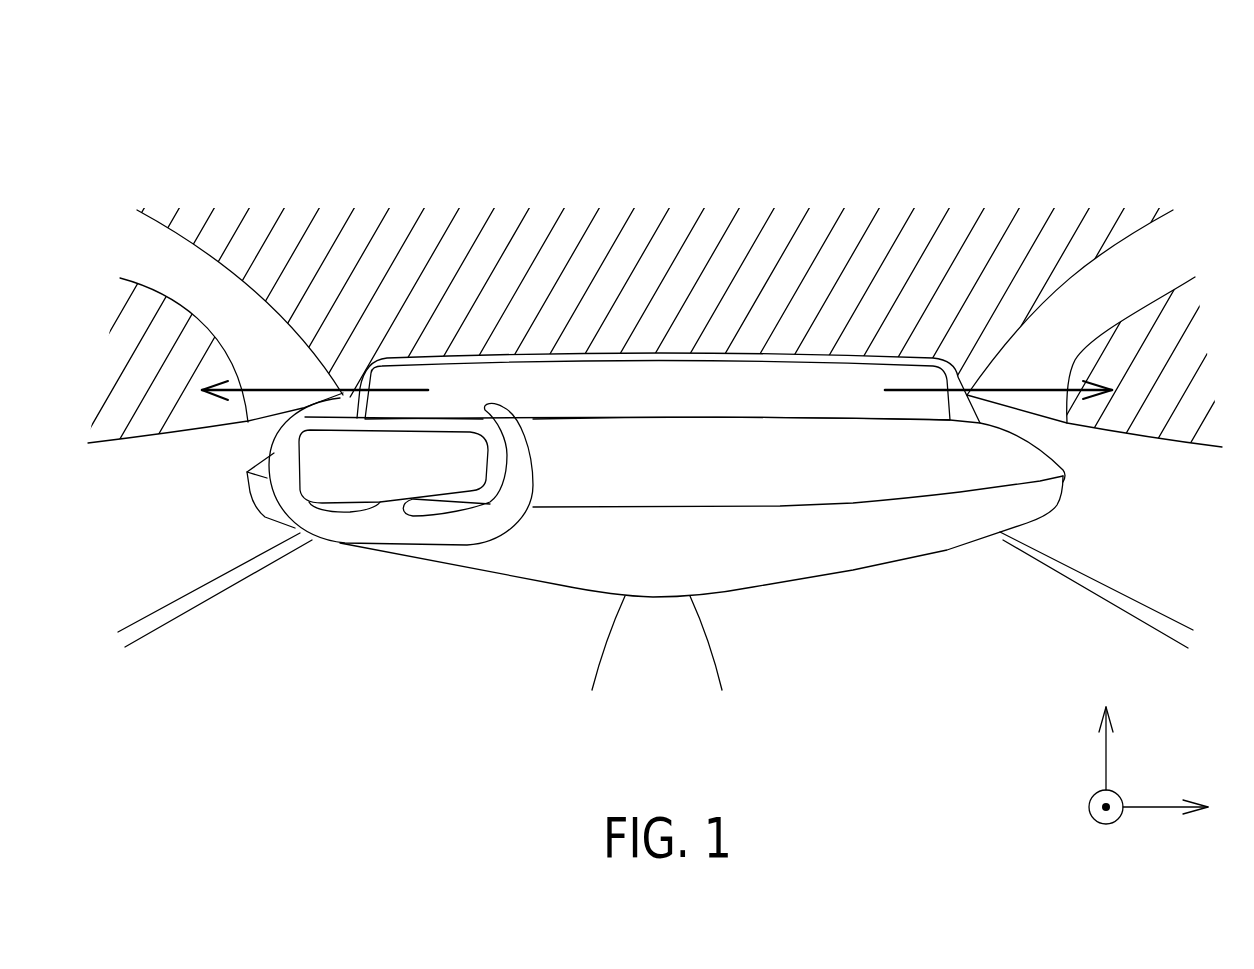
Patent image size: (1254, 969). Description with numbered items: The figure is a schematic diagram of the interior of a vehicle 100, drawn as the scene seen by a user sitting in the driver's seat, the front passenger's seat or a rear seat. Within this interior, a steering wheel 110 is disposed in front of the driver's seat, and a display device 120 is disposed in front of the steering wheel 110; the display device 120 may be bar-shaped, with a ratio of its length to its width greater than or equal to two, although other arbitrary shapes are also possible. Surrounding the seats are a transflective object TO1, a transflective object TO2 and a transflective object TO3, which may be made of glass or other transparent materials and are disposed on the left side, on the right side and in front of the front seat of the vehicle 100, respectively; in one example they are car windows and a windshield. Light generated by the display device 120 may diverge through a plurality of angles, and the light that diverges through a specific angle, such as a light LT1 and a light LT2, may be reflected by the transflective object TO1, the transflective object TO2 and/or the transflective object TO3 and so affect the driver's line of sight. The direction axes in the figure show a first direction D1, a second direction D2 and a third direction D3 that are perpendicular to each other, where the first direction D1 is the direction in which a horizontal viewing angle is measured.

The vehicle 100 is at (980, 117).
The steering wheel 110 is at (369, 533).
The display device 120 is at (798, 405).
The transflective object TO1 is at (190, 376).
The transflective object TO2 is at (1184, 378).
The transflective object TO3 is at (692, 286).
The light LT1 is at (315, 376).
The light LT2 is at (998, 376).
The first direction D1 is at (1186, 806).
The second direction D2 is at (1085, 811).
The third direction D3 is at (1105, 731).